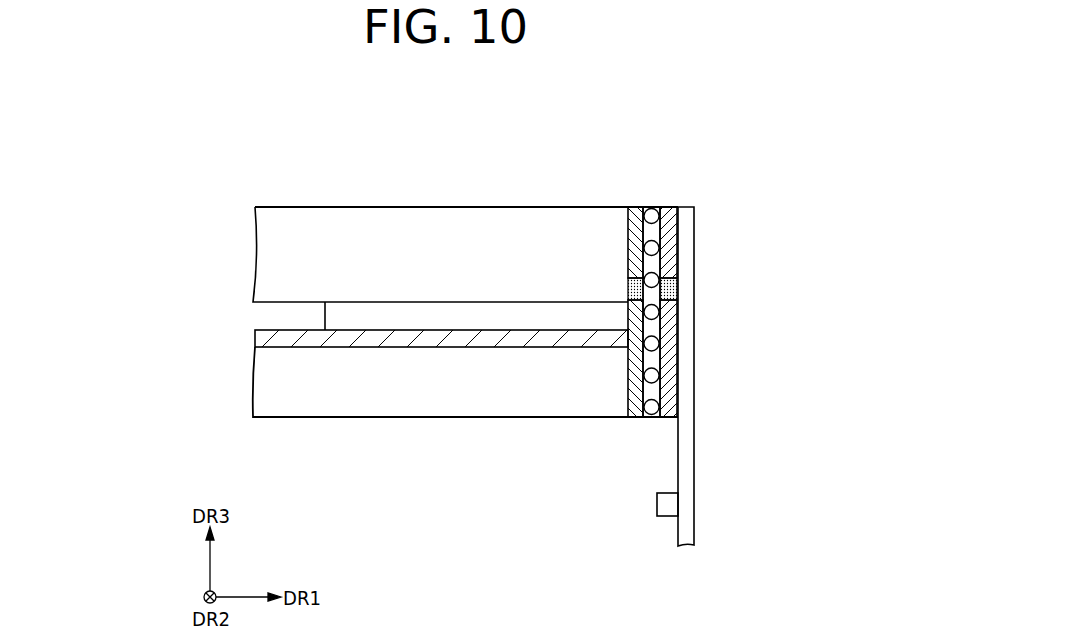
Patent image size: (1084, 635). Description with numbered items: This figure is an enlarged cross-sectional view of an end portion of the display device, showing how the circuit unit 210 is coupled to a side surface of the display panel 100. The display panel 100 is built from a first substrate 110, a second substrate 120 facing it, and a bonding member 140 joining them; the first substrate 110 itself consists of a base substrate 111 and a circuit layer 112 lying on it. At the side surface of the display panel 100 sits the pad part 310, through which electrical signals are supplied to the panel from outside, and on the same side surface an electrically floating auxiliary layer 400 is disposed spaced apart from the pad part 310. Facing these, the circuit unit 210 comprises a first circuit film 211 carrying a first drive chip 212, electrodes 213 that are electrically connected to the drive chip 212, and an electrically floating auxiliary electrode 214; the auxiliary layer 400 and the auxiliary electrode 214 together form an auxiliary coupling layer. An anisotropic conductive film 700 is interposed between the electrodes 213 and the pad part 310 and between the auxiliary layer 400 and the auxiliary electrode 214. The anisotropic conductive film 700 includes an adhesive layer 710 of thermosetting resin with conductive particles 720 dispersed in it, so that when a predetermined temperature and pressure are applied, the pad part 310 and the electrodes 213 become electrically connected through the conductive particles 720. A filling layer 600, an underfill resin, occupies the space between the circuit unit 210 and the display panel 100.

The display panel 100 is at (105, 242).
The first substrate 110 is at (166, 325).
The base substrate 111 is at (263, 382).
The circuit layer 112 is at (263, 334).
The second substrate 120 is at (272, 253).
The bonding member 140 is at (340, 316).
The circuit unit 210 is at (780, 247).
The first circuit film 211 is at (686, 450).
The first drive chip 212 is at (668, 503).
The electrode 213 is at (668, 348).
The auxiliary electrode 214 is at (670, 260).
The pad part 310 is at (634, 405).
The auxiliary layer 400 is at (637, 218).
The filling layer 600 is at (628, 290).
The anisotropic conductive film 700 is at (760, 111).
The adhesive layer 710 is at (660, 228).
The conductive particle 720 is at (653, 211).